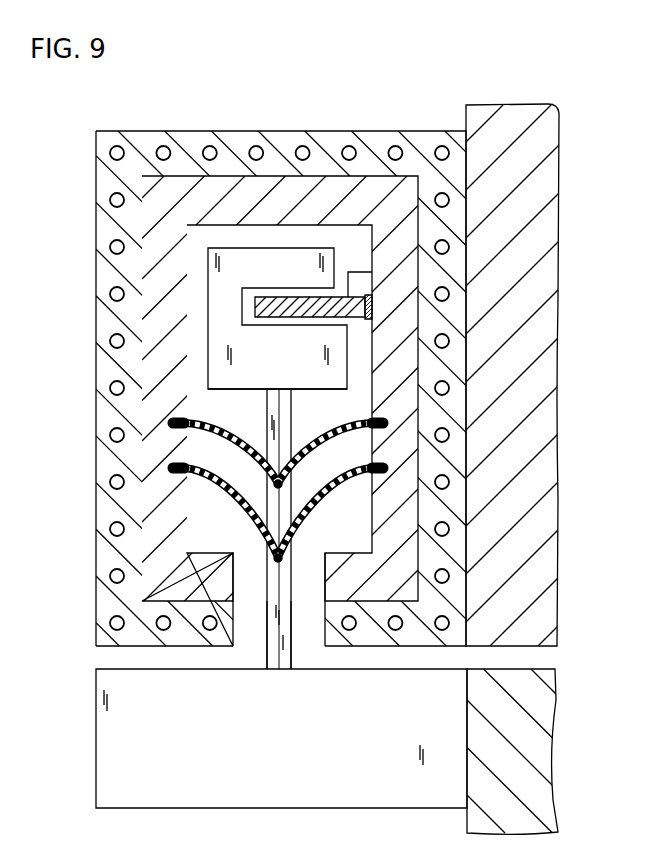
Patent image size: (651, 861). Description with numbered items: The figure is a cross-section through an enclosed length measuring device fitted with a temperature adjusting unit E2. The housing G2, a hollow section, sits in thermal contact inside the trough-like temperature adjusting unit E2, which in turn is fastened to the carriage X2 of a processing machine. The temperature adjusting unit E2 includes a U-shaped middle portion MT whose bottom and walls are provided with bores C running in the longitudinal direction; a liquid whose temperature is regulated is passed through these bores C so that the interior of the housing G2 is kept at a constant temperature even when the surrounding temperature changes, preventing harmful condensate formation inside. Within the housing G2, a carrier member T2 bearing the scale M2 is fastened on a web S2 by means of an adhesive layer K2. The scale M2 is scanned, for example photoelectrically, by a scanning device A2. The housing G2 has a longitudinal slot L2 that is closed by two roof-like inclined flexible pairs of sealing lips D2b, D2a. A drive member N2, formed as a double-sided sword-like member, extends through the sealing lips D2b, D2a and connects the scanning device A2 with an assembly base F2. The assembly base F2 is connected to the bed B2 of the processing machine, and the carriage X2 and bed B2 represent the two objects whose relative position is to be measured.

The U-shaped middle portion MT is at (286, 133).
The bores C is at (209, 146).
The housing G2 is at (160, 212).
The temperature adjusting unit E2 is at (103, 312).
The carriage X2 is at (548, 246).
The web S2 is at (362, 290).
The carrier member T2 is at (278, 297).
The adhesive layer K2 is at (371, 325).
The scale M2 is at (298, 325).
The scanning device A2 is at (257, 363).
The sealing lips D2b is at (337, 430).
The sealing lips D2a is at (322, 496).
The longitudinal slot L2 is at (298, 596).
The drive member N2 is at (287, 626).
The bed B2 is at (545, 698).
The assembly base F2 is at (321, 809).